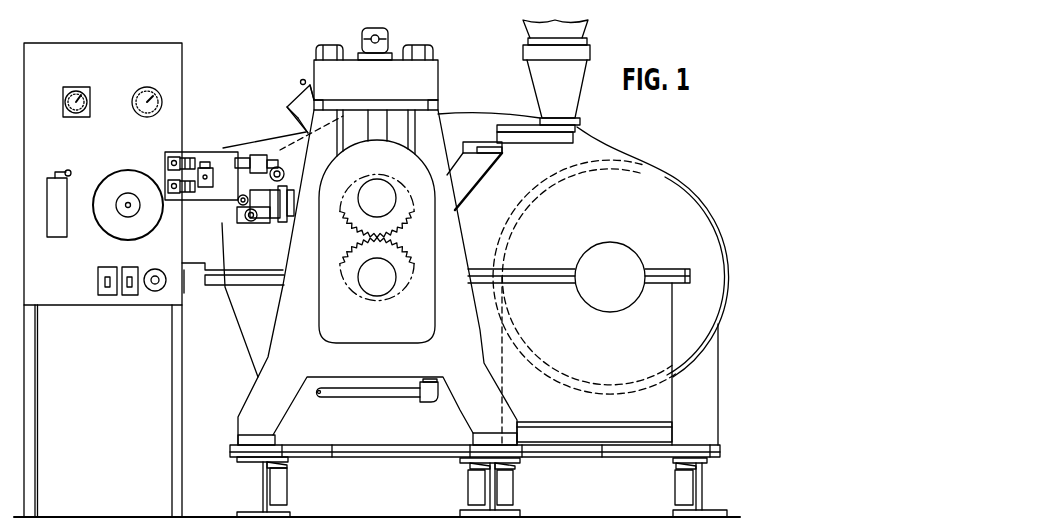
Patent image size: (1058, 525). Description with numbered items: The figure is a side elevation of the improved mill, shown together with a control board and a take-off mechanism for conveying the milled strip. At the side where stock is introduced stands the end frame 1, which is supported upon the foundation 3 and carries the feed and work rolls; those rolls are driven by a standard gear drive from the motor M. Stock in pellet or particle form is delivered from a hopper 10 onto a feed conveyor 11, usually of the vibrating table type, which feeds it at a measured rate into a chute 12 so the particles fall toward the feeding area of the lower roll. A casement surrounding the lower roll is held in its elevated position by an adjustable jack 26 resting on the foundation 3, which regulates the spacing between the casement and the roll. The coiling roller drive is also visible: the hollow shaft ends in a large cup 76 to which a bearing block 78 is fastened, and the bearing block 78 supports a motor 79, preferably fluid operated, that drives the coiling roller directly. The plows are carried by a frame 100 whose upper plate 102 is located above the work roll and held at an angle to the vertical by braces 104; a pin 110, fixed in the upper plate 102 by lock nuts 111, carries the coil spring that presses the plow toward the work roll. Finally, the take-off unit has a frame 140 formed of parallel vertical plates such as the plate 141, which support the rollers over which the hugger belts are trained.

The end frame 1 is at (456, 250).
The foundation 3 is at (233, 450).
The hopper 10 is at (581, 88).
The feed conveyor 11 is at (512, 144).
The chute 12 is at (472, 180).
The jack 26 is at (285, 427).
The cup 76 is at (298, 203).
The bearing block 78 is at (283, 221).
The motor 79 is at (238, 208).
The frame 100 is at (289, 94).
The upper plate 102 is at (296, 104).
The braces 104 is at (296, 126).
The pin 110 is at (303, 84).
The lock nuts 111 is at (302, 80).
The take-off unit frame 140 is at (224, 145).
The vertical plate 141 is at (213, 155).
The motor M is at (673, 177).